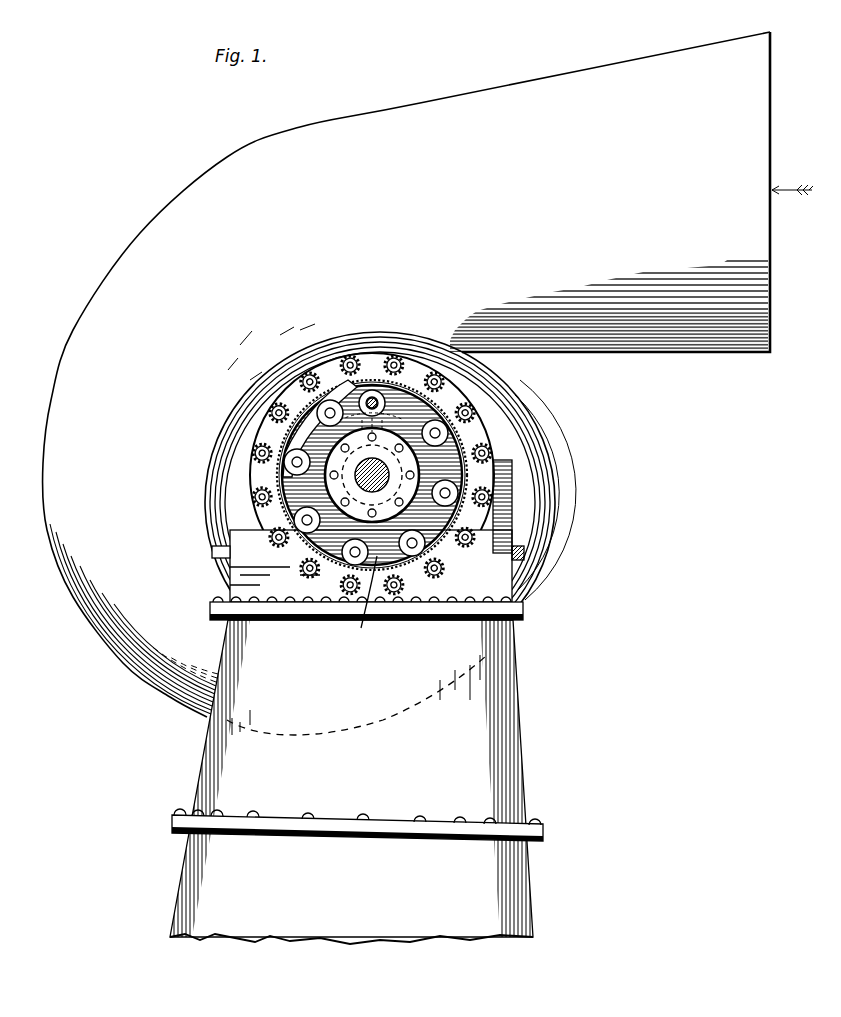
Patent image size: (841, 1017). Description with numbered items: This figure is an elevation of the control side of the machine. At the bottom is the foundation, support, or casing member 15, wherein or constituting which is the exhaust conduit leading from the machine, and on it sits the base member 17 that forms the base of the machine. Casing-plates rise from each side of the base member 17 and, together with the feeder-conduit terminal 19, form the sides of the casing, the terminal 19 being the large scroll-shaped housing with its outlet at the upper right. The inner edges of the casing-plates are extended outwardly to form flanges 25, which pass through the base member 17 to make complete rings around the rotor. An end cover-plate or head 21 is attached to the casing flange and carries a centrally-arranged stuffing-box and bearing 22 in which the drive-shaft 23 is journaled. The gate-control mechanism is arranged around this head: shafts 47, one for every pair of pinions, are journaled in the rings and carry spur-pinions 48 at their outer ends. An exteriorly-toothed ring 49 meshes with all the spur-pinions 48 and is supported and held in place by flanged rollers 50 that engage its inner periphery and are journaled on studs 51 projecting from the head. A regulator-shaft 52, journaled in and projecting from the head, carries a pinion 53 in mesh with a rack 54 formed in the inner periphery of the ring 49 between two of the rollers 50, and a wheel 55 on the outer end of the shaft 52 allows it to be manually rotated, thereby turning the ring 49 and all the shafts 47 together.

The foundation, support, or casing member 15 is at (351, 782).
The base member 17 is at (232, 583).
The feeder-conduit terminal 19 is at (170, 713).
The end cover-plate or head 21 is at (361, 603).
The stuffing-box and bearing 22 is at (383, 474).
The drive-shaft 23 is at (364, 487).
The flange 25 is at (244, 425).
The shaft 47 is at (272, 494).
The spur-pinion 48 is at (262, 497).
The exteriorly-toothed ring 49 is at (458, 442).
The flanged roller 50 is at (436, 446).
The stud 51 is at (350, 546).
The regulator-shaft 52 is at (388, 404).
The pinion 53 is at (360, 417).
The rack 54 is at (382, 397).
The wheel 55 is at (393, 410).